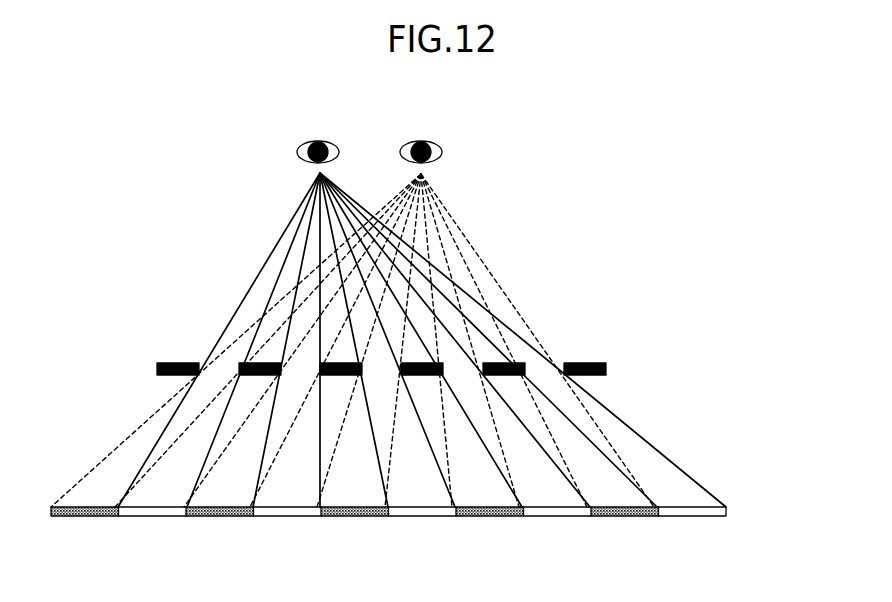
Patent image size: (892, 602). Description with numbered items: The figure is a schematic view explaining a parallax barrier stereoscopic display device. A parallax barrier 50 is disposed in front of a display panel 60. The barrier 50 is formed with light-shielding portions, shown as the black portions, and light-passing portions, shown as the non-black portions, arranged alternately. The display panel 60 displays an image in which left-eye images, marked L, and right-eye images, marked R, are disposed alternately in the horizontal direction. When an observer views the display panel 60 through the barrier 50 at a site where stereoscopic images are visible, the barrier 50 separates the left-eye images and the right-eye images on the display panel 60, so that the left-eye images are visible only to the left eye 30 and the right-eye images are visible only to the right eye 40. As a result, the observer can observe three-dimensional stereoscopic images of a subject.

The left eye 30 is at (437, 141).
The right eye 40 is at (318, 140).
The parallax barrier 50 is at (603, 363).
The display panel 60 is at (728, 507).